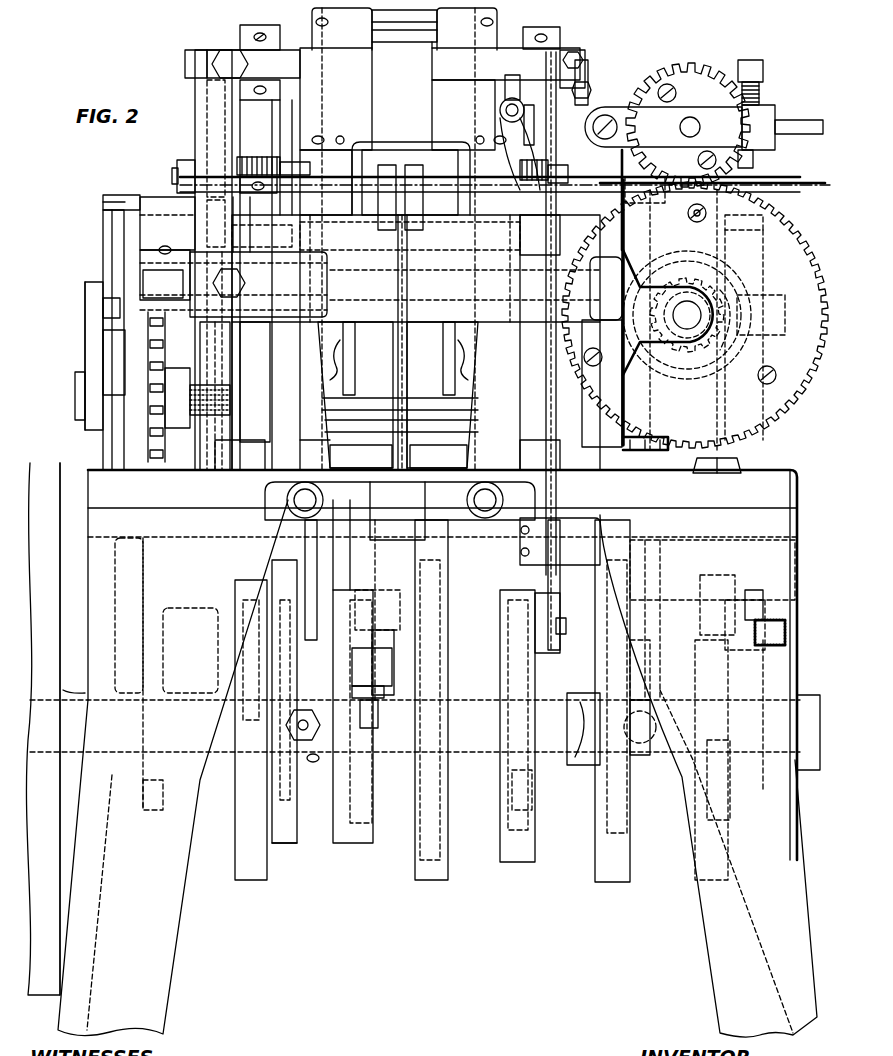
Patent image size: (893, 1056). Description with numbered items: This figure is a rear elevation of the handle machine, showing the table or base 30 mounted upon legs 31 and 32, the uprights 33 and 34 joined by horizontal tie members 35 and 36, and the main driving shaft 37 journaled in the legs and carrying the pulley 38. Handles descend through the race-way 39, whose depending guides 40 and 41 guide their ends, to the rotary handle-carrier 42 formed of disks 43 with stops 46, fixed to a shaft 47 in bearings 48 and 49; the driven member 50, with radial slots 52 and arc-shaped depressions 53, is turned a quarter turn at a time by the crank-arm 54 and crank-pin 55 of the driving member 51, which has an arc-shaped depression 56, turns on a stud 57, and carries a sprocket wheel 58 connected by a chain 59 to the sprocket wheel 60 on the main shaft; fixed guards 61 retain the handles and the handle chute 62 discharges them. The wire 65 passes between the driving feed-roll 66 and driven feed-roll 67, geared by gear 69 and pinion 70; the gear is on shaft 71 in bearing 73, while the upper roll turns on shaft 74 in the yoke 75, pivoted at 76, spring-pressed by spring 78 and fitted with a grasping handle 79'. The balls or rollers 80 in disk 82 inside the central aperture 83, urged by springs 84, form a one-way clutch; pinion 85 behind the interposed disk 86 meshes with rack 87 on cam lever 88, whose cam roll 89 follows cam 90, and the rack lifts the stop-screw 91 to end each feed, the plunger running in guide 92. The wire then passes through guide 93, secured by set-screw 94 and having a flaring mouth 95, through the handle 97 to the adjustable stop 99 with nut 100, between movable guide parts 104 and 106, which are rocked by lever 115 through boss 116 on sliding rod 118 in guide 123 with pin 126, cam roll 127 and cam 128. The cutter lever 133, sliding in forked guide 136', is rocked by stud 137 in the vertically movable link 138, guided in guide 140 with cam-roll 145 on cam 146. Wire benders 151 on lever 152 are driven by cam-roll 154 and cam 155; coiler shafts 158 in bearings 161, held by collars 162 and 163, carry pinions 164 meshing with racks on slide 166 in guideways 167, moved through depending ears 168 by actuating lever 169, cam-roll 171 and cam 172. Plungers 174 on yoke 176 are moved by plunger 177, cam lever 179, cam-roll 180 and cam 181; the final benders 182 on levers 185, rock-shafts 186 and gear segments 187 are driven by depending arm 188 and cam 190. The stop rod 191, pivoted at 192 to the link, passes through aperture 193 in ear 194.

The table or base 30 is at (775, 472).
The leg 31 is at (805, 665).
The leg 32 is at (173, 768).
The upright 33 is at (606, 288).
The upright 34 is at (195, 228).
The horizontal tie member 35 is at (295, 58).
The horizontal tie member 36 is at (442, 393).
The main driving shaft 37 is at (415, 715).
The pulley 38 is at (43, 729).
The race-way 39 is at (404, 29).
The depending guide 40 is at (530, 182).
The depending guide 41 is at (305, 116).
The rotary handle-carrier 42 is at (417, 342).
The disk 43 is at (386, 393).
The stop 46 is at (355, 372).
The shaft 47 is at (233, 284).
The bearing 48 is at (529, 235).
The bearing 49 is at (266, 239).
The driven member 50 is at (129, 197).
The driving member 51 is at (103, 436).
The radial slot 52 is at (103, 202).
The arc-shaped depression 53 is at (103, 245).
The crank-arm 54 is at (85, 335).
The crank-pin 55 is at (103, 308).
The arc-shaped depression 56 is at (108, 348).
The stud 57 is at (75, 395).
The sprocket wheel 58 is at (170, 380).
The chain 59 is at (157, 502).
The sprocket wheel 60 is at (165, 674).
The fixed guard 61 is at (338, 142).
The handle chute 62 is at (314, 430).
The wire 65 is at (505, 177).
The driving feed-roll 66 is at (790, 235).
The driven feed-roll 67 is at (710, 70).
The gear 69 is at (770, 205).
The pinion 70 is at (690, 64).
The shaft 71 is at (687, 315).
The bearing 73 is at (687, 306).
The shaft 74 is at (700, 127).
The yoke 75 is at (770, 120).
The pivot 76 is at (622, 110).
The spring 78 is at (745, 180).
The grasping handle 79' is at (801, 142).
The ball or roller 80 is at (687, 313).
The disk 82 is at (736, 350).
The central aperture 83 is at (735, 285).
The spring 84 is at (685, 298).
The pinion 85 is at (600, 362).
The interposed disk 86 is at (699, 436).
The rack 87 is at (706, 379).
The cam lever 88 is at (750, 592).
The cam roll 89 is at (760, 618).
The cam 90 is at (735, 880).
The stop-screw 91 is at (765, 82).
The guide 92 is at (775, 298).
The guide 93 is at (654, 315).
The set-screw 94 is at (630, 132).
The flaring entrance or mouth 95 is at (650, 172).
The handle 97 is at (418, 30).
The adjustable stop 99 is at (178, 190).
The nut 100 is at (183, 160).
The movable part 104 is at (548, 180).
The movable part 106 is at (378, 239).
The lever 115 is at (648, 575).
The boss 116 is at (637, 748).
The sliding rod 118 is at (645, 700).
The guide 123 is at (755, 790).
The pin 126 is at (584, 729).
The cam roll 127 is at (600, 790).
The cam 128 is at (633, 862).
The cutter lever 133 is at (595, 65).
The forked guide 136' is at (600, 52).
The stud 137 is at (500, 140).
The vertically movable link 138 is at (560, 18).
The guide 140 is at (568, 548).
The cam-roll 145 is at (528, 643).
The cam 146 is at (535, 800).
The wire bender 151 is at (405, 268).
The lever 152 is at (326, 544).
The cam-roll 154 is at (240, 770).
The cam 155 is at (272, 810).
The coiler shaft 158 is at (452, 304).
The bearing 161 is at (270, 300).
The collar 162 is at (240, 33).
The collar 163 is at (198, 92).
The pinion 164 is at (257, 158).
The slide 166 is at (305, 135).
The guideway 167 is at (380, 142).
The depending ear 168 is at (396, 222).
The actuating lever 169 is at (435, 365).
The cam-roll 171 is at (410, 775).
The cam 172 is at (415, 860).
The plunger 174 is at (265, 470).
The yoke 176 is at (398, 457).
The plunger 177 is at (403, 635).
The cam lever 179 is at (378, 686).
The cam-roll 180 is at (355, 672).
The cam 181 is at (352, 845).
The bender 182 is at (257, 283).
The lever 185 is at (401, 429).
The rock-shaft 186 is at (287, 500).
The gear segment 187 is at (395, 511).
The depending arm 188 is at (330, 640).
The cam 190 is at (290, 850).
The stop rod 191 is at (512, 75).
The pivot 192 is at (495, 80).
The aperture 193 is at (503, 108).
The ear 194 is at (498, 118).